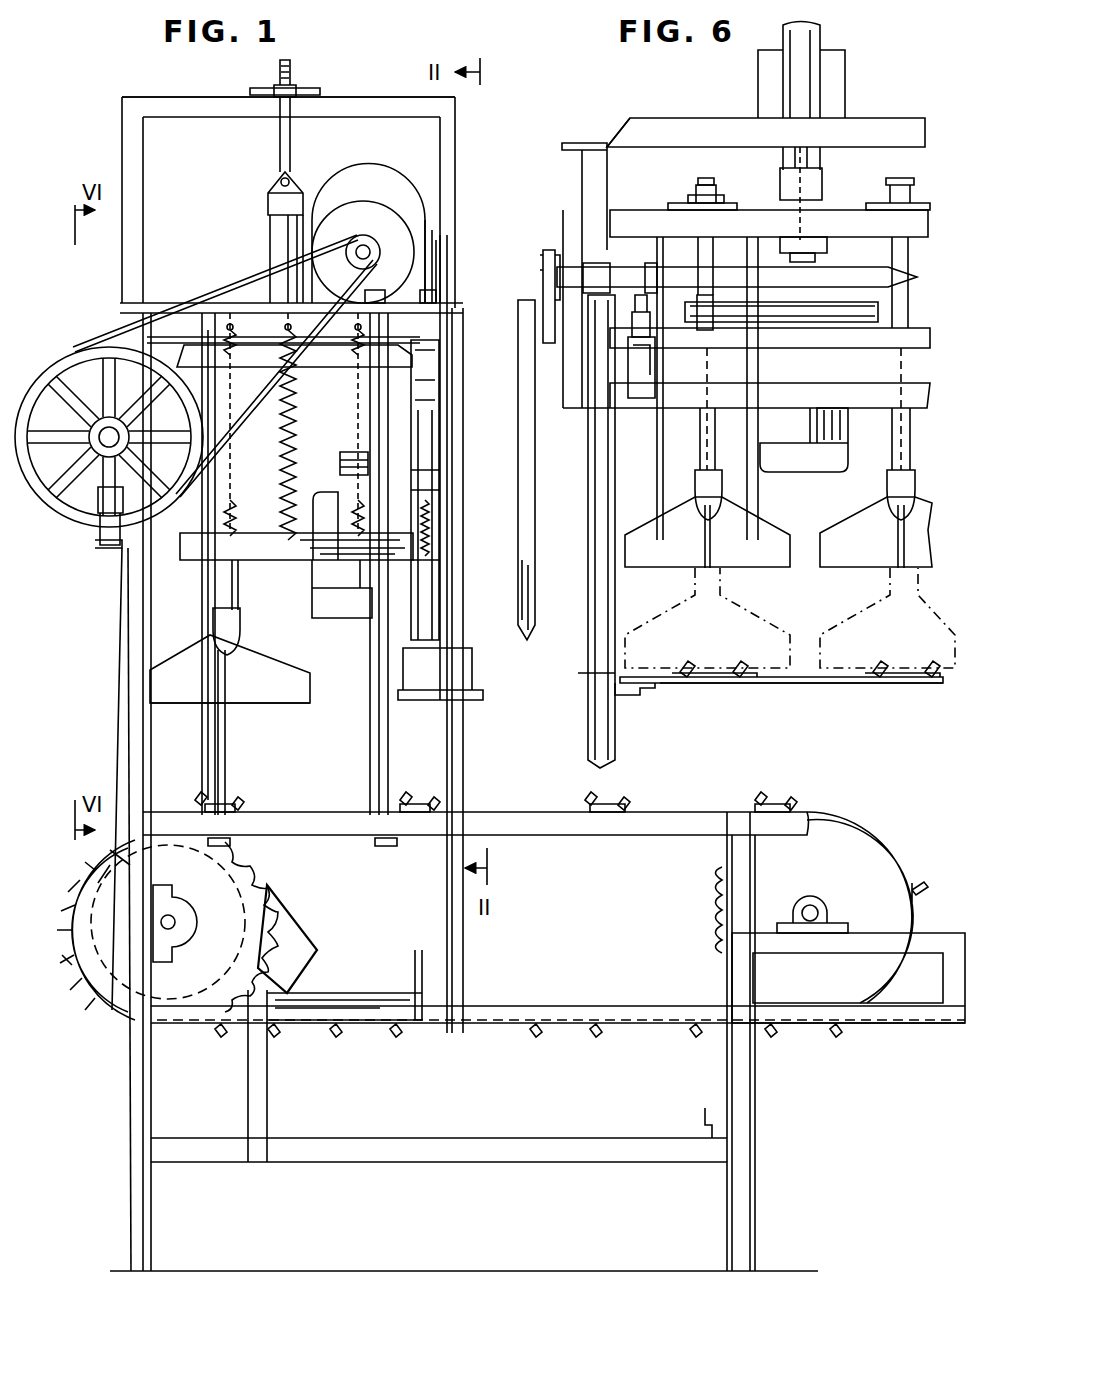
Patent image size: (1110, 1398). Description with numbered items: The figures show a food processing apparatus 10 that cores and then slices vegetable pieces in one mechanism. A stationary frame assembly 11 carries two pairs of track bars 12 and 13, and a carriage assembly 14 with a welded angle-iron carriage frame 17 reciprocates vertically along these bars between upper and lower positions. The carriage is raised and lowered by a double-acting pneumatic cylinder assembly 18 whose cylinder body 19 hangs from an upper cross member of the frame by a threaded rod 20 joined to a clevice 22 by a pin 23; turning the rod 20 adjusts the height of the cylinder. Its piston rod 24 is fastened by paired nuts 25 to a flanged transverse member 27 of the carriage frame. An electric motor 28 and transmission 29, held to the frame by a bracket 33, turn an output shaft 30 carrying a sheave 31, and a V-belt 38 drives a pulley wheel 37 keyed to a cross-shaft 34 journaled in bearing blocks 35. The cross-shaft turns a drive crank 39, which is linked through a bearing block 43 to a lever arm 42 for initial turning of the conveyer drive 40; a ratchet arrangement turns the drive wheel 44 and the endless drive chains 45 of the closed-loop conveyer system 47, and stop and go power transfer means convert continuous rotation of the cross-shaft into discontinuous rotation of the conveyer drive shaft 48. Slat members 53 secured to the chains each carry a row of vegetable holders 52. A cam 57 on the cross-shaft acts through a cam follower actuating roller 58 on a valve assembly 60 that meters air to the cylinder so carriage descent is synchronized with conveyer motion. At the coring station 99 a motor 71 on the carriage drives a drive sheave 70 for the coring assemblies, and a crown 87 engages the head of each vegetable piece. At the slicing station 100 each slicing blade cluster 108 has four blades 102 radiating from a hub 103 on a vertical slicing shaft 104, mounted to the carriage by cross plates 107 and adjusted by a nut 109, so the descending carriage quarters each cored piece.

In FIG. 1, the food processing apparatus 10 is at (115, 92).
In FIG. 6, the food processing apparatus 10 is at (625, 105).
In FIG. 1, the stationary frame assembly 11 is at (372, 100).
In FIG. 6, the stationary frame assembly 11 is at (700, 118).
In FIG. 1, the track bars 12 is at (372, 668).
In FIG. 1, the track bars 13 is at (222, 757).
In FIG. 1, the carriage assembly 14 is at (267, 560).
In FIG. 6, the carriage assembly 14 is at (553, 208).
In FIG. 1, the carriage frame 17 is at (410, 348).
In FIG. 6, the carriage frame 17 is at (835, 212).
In FIG. 1, the pneumatic cylinder assembly 18 is at (262, 200).
In FIG. 6, the pneumatic cylinder assembly 18 is at (812, 35).
In FIG. 1, the cylinder body 19 is at (268, 228).
In FIG. 1, the rod 20 is at (298, 137).
In FIG. 1, the clevice 22 is at (298, 182).
In FIG. 1, the pin 23 is at (280, 178).
In FIG. 6, the piston rod 24 is at (780, 203).
In FIG. 6, the nuts 25 is at (818, 256).
In FIG. 6, the transverse member 27 is at (782, 246).
In FIG. 1, the electric motor 28 is at (370, 165).
In FIG. 1, the transmission 29 is at (418, 242).
In FIG. 1, the output shaft 30 is at (366, 240).
In FIG. 1, the sheave 31 is at (378, 255).
In FIG. 1, the bracket 33 is at (418, 298).
In FIG. 1, the cross-shaft 34 is at (100, 425).
In FIG. 6, the cross-shaft 34 is at (900, 292).
In FIG. 6, the bearing blocks 35 is at (588, 255).
In FIG. 1, the pulley wheel 37 is at (70, 515).
In FIG. 1, the V-belt 38 is at (238, 282).
In FIG. 6, the drive crank 39 is at (548, 300).
In FIG. 1, the conveyer drive 40 is at (116, 688).
In FIG. 6, the conveyer drive 40 is at (518, 560).
In FIG. 1, the lever arm 42 is at (122, 742).
In FIG. 6, the lever arm 42 is at (530, 518).
In FIG. 1, the bearing block 43 is at (425, 490).
In FIG. 6, the bearing block 43 is at (530, 318).
In FIG. 1, the drive wheel 44 is at (240, 912).
In FIG. 1, the drive chains 45 is at (88, 972).
In FIG. 1, the conveyer system 47 is at (690, 808).
In FIG. 1, the conveyer drive shaft 48 is at (178, 922).
In FIG. 1, the vegetable holders 52 is at (258, 802).
In FIG. 6, the vegetable holders 52 is at (728, 675).
In FIG. 6, the slat member 53 is at (855, 685).
In FIG. 6, the cam 57 is at (650, 265).
In FIG. 6, the cam follower actuating roller 58 is at (635, 320).
In FIG. 6, the valve assembly 60 is at (650, 385).
In FIG. 1, the drive sheave 70 is at (340, 458).
In FIG. 1, the motor 71 is at (325, 492).
In FIG. 6, the motor 71 is at (795, 460).
In FIG. 1, the crown 87 is at (472, 668).
In FIG. 1, the coring station 99 is at (458, 717).
In FIG. 1, the slicing station 100 is at (232, 722).
In FIG. 1, the blades 102 is at (168, 700).
In FIG. 6, the blades 102 is at (762, 568).
In FIG. 1, the hub 103 is at (240, 620).
In FIG. 6, the hub 103 is at (695, 492).
In FIG. 1, the slicing shaft 104 is at (235, 568).
In FIG. 6, the slicing shaft 104 is at (718, 425).
In FIG. 6, the cross plates 107 is at (730, 205).
In FIG. 1, the slicing blade cluster 108 is at (185, 645).
In FIG. 6, the slicing blade cluster 108 is at (620, 565).
In FIG. 6, the nut 109 is at (692, 200).